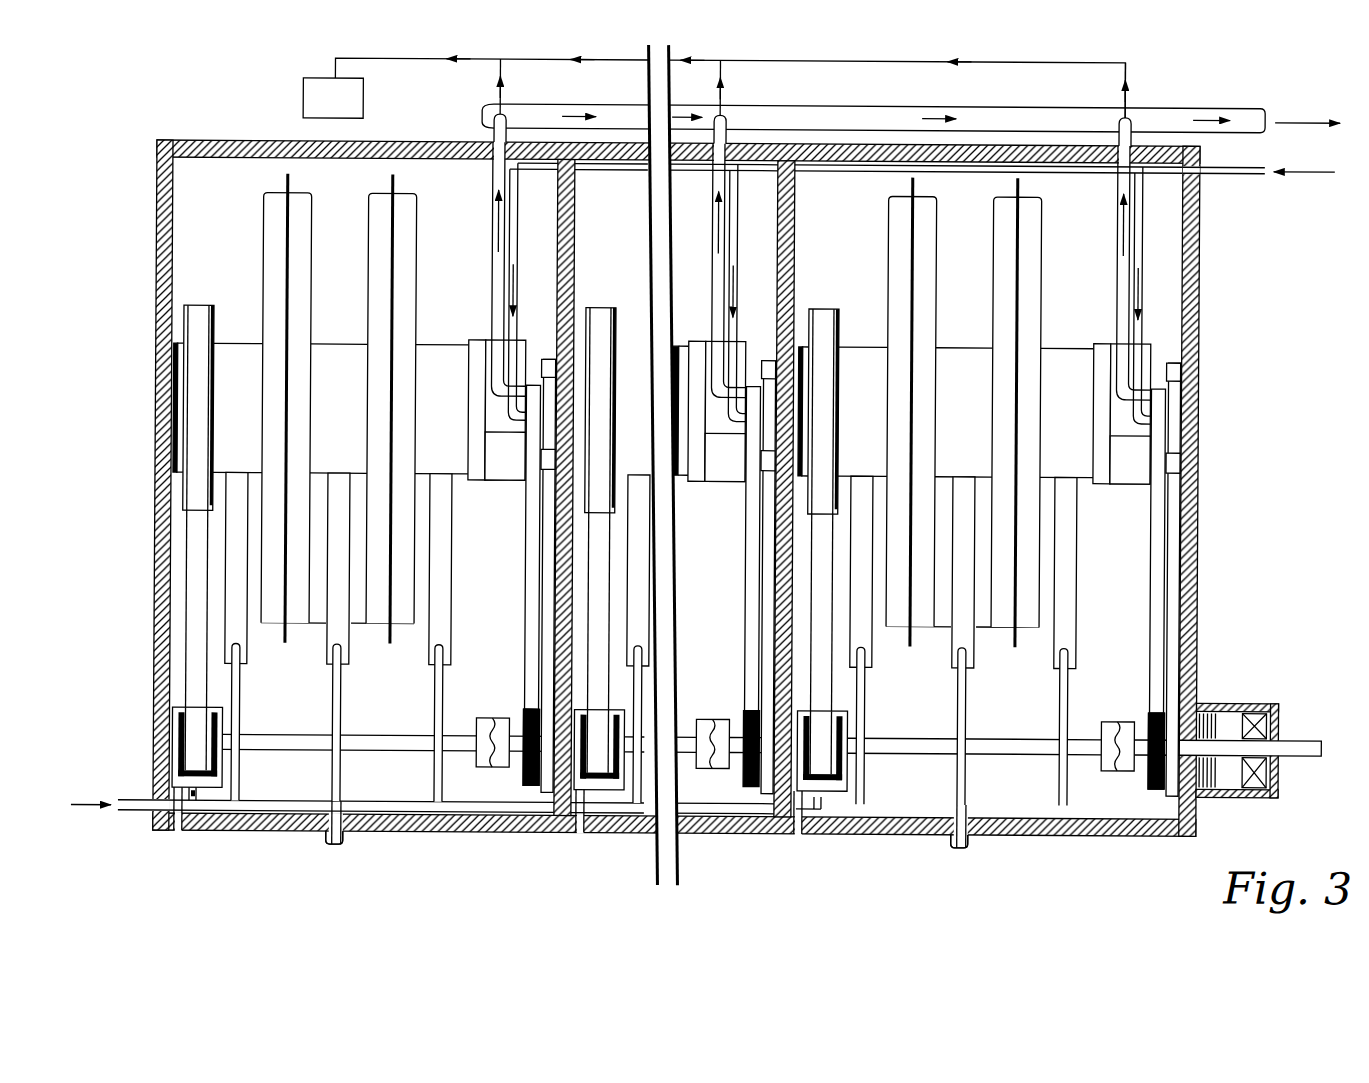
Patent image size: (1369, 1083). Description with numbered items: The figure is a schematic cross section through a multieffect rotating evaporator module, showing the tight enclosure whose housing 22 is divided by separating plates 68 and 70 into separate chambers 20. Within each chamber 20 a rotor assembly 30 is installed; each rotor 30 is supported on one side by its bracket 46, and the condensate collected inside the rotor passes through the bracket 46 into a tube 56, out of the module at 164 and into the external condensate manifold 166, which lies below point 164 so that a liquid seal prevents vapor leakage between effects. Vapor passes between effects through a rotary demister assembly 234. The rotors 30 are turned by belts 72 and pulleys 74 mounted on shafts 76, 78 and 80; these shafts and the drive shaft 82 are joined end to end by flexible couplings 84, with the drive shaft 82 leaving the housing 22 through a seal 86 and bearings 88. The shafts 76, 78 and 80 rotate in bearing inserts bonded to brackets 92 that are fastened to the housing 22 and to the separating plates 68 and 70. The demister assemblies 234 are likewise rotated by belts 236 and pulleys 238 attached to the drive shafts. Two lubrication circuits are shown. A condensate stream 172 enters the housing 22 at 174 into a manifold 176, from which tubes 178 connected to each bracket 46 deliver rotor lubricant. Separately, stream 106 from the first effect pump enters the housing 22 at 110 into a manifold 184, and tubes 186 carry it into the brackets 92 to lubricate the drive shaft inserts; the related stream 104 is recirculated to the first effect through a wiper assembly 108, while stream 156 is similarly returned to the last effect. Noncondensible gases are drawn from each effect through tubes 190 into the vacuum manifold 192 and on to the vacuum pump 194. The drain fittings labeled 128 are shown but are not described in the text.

The chamber 20 is at (507, 594).
The housing 22 is at (1200, 581).
The rotor assembly 30 is at (419, 233).
The bracket 46 is at (488, 338).
The tube 56 is at (492, 288).
The separating plate 68 is at (556, 640).
The separating plate 70 is at (776, 640).
The belt 72 is at (188, 575).
The pulley 74 is at (185, 720).
The shaft 76 is at (367, 734).
The shaft 78 is at (687, 733).
The shaft 80 is at (1082, 734).
The drive shaft 82 is at (1308, 734).
The flexible coupling 84 is at (500, 716).
The seal 86 is at (1210, 706).
The bearing 88 is at (1260, 704).
The bracket 92 is at (190, 830).
The stream 104 is at (336, 850).
The stream 106 is at (118, 846).
The wiper assembly 108 is at (326, 647).
The housing inlet 110 is at (153, 797).
The drain fitting 128 is at (350, 842).
The stream 156 is at (962, 852).
The module outlet 164 is at (492, 140).
The external condensate manifold 166 is at (935, 102).
The condensate stream 172 is at (1321, 189).
The housing inlet 174 is at (1204, 169).
The manifold 176 is at (937, 168).
The tube 178 is at (522, 242).
The manifold 184 is at (367, 799).
The tube 186 is at (200, 797).
The tube 190 is at (502, 104).
The vacuum manifold 192 is at (925, 59).
The vacuum pump 194 is at (303, 97).
The rotary demister assembly 234 is at (545, 340).
The belt 236 is at (527, 510).
The pulley 238 is at (525, 773).